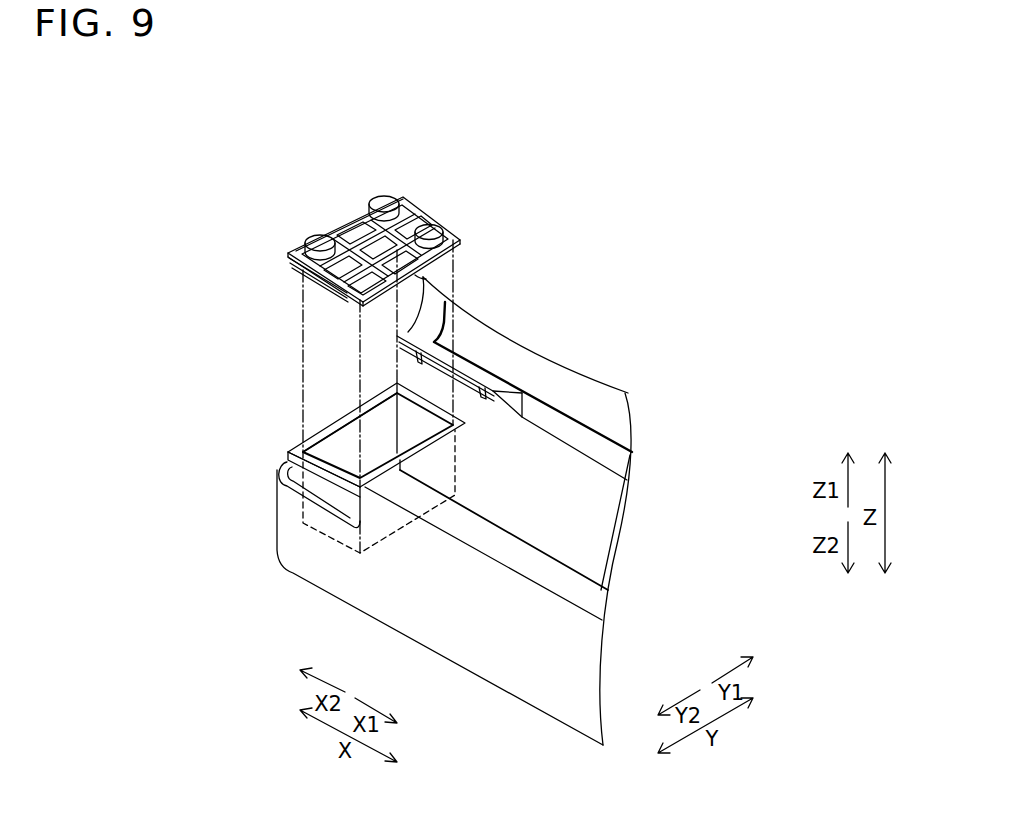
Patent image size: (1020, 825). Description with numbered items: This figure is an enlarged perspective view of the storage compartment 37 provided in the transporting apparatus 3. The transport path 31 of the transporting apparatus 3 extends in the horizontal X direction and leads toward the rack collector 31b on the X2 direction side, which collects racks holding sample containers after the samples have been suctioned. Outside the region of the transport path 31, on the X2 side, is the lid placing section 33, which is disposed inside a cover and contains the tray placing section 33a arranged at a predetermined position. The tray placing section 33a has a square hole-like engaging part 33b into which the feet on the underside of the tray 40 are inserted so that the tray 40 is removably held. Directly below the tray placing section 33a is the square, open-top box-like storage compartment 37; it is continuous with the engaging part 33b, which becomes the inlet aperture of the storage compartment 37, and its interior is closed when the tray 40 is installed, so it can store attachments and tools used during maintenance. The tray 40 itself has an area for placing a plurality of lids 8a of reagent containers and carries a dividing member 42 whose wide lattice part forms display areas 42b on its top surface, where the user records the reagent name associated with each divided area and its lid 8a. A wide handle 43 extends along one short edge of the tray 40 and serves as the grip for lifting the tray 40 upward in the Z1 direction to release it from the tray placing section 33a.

The transporting apparatus 3 is at (475, 652).
The transport path 31 is at (576, 478).
The rack collector 31b is at (590, 548).
The lid placing section 33 is at (268, 443).
The tray placing section 33a is at (316, 435).
The engaging part 33b is at (345, 435).
The storage compartment 37 is at (323, 530).
The tray 40 is at (378, 229).
The dividing member 42 is at (300, 250).
The display area 42b is at (353, 212).
The handle 43 is at (290, 262).
The lid 8a is at (320, 227).